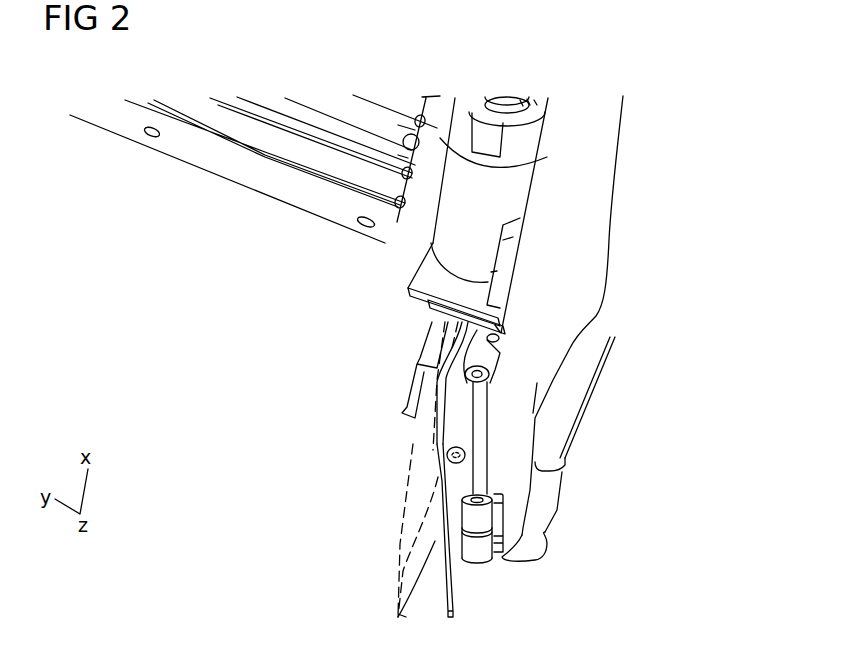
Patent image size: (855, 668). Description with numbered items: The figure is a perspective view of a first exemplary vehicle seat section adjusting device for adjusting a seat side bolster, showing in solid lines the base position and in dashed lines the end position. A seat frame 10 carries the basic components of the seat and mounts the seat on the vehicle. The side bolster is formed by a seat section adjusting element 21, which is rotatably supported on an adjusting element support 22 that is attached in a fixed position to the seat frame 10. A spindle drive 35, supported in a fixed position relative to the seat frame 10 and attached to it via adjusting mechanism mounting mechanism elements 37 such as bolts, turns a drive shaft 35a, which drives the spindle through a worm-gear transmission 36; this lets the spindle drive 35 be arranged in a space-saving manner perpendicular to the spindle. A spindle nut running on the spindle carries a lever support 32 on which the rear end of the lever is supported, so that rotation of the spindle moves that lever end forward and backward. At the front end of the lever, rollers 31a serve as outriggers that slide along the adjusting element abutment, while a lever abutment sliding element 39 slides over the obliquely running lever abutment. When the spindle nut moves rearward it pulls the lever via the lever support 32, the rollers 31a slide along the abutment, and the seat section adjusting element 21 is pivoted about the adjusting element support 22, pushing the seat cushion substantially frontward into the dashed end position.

The seat frame 10 is at (730, 8).
The seat section adjusting element 21 is at (403, 577).
The adjusting element support 22 is at (255, 121).
The rollers 31a is at (472, 378).
The lever support 32 is at (708, 338).
The spindle drive 35 is at (452, 208).
The drive shaft 35a is at (564, 5).
The worm-gear transmission 36 is at (490, 4).
The adjusting mechanism mounting mechanism elements 37 is at (660, 8).
The lever abutment sliding element 39 is at (708, 569).